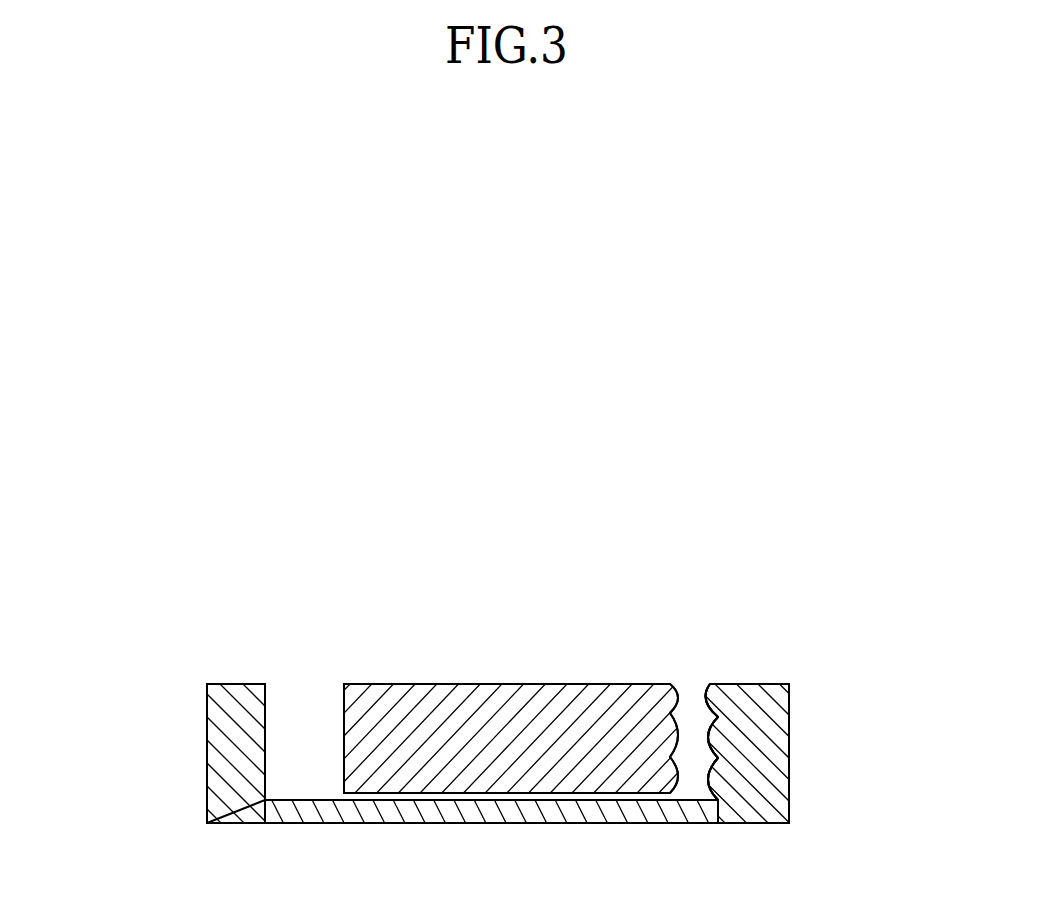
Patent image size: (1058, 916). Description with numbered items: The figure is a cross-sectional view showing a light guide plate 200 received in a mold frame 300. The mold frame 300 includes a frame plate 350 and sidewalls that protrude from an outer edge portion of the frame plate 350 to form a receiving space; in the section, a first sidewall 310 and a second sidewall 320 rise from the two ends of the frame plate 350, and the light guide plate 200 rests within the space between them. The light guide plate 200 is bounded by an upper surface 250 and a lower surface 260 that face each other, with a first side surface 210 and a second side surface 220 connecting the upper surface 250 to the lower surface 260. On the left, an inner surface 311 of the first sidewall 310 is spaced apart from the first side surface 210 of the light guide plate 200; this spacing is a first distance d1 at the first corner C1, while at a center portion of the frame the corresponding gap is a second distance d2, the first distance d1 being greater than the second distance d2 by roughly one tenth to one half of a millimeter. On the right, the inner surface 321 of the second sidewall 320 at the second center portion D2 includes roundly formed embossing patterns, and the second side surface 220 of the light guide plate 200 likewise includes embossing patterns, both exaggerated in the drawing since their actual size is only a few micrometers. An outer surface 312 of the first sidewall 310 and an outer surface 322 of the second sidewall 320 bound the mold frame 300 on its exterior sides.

The light guide plate 200 is at (478, 676).
The first side surface 210 is at (345, 707).
The second side surface 220 is at (673, 698).
The upper surface 250 is at (536, 684).
The lower surface 260 is at (390, 790).
The mold frame 300 is at (793, 778).
The first sidewall 310 is at (120, 713).
The inner surface 311 is at (267, 770).
The first side wall outer surface 312 is at (207, 720).
The second sidewall 320 is at (872, 627).
The inner surface 321 is at (708, 698).
The second side wall outer surface 322 is at (789, 732).
The frame plate 350 is at (535, 812).
The first corner C1 is at (302, 728).
The second center portion D2 is at (700, 730).
The first distance d1 is at (345, 857).
The second distance d2 is at (668, 768).